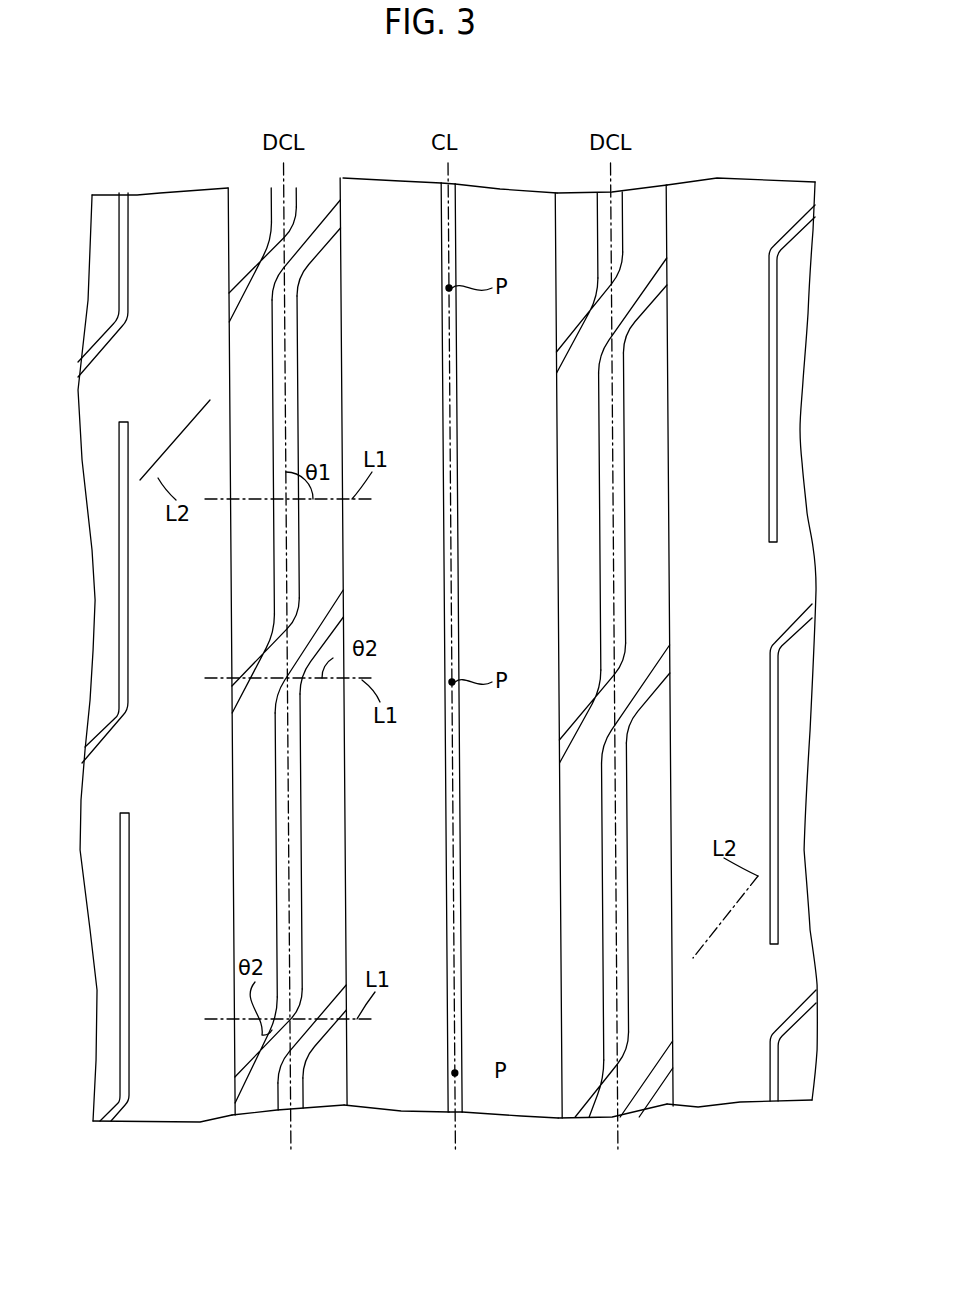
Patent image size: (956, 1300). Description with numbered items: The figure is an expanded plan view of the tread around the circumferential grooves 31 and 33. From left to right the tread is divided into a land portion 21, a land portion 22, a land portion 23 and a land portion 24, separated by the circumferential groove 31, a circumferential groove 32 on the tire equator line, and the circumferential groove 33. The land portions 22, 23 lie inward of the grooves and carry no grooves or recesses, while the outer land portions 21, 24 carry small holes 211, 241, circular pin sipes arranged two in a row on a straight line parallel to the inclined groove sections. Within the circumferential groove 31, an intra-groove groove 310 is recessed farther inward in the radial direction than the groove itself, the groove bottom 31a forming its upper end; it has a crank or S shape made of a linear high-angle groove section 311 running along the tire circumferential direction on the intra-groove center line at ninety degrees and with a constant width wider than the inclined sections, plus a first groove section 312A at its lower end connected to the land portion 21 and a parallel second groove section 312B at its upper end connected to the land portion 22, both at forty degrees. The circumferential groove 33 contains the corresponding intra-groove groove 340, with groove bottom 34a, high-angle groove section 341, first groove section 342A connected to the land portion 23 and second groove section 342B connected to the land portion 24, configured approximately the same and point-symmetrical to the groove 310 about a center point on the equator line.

The land portion 21 is at (160, 205).
The land portion 22 is at (386, 201).
The land portion 23 is at (507, 203).
The land portion 24 is at (733, 200).
The circumferential groove 31 is at (288, 594).
The circumferential groove 32 is at (458, 180).
The circumferential groove 33 is at (619, 601).
The small hole 211 is at (166, 449).
The small hole 241 is at (716, 542).
The intra-groove groove 310 is at (302, 805).
The high-angle groove section 311 is at (268, 783).
The groove bottom 31a is at (322, 870).
The first groove section 312A is at (266, 1035).
The second groove section 312B is at (285, 648).
The groove portion of main groove 340 is at (596, 468).
The groove portion of main groove 34a is at (576, 549).
The raised bottom portion (narrow rib) of main groove 341 is at (625, 458).
The inclined groove (sipe) of main groove 342A is at (578, 728).
The inclined groove (sipe) of main groove 342B is at (633, 323).